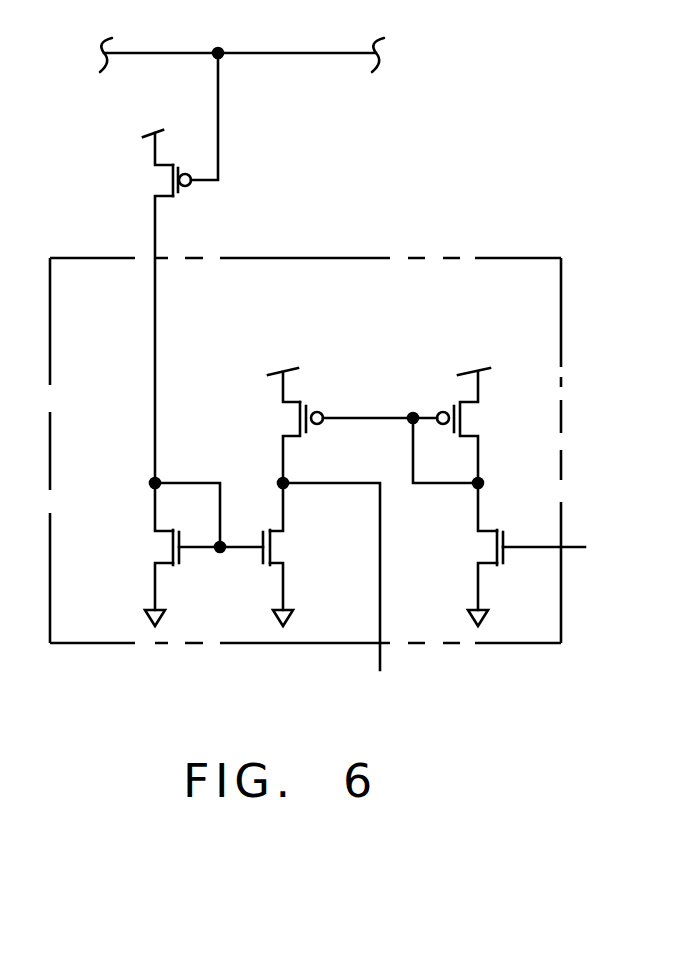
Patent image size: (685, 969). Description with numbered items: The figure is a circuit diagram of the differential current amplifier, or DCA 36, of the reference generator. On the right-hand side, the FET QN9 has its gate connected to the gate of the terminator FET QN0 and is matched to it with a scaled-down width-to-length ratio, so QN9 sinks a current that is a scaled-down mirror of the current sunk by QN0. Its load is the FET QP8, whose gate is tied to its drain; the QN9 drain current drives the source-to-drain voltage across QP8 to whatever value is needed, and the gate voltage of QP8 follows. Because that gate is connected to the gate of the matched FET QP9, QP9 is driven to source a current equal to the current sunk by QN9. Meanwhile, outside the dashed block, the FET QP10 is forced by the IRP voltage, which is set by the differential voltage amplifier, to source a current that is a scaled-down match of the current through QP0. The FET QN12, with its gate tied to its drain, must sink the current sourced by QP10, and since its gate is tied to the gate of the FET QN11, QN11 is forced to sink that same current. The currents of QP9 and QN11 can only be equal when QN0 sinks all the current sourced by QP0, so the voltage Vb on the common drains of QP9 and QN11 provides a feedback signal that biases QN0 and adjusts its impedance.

The differential current amplifier (DCA) 36 is at (510, 259).
The FET QP10 is at (128, 282).
The FET QP9 is at (325, 400).
The FET QP8 is at (477, 400).
The FET QN12 is at (146, 554).
The FET QN11 is at (294, 554).
The FET QN9 is at (542, 554).
The IRP voltage IRP is at (277, 107).
The voltage Vb is at (340, 600).